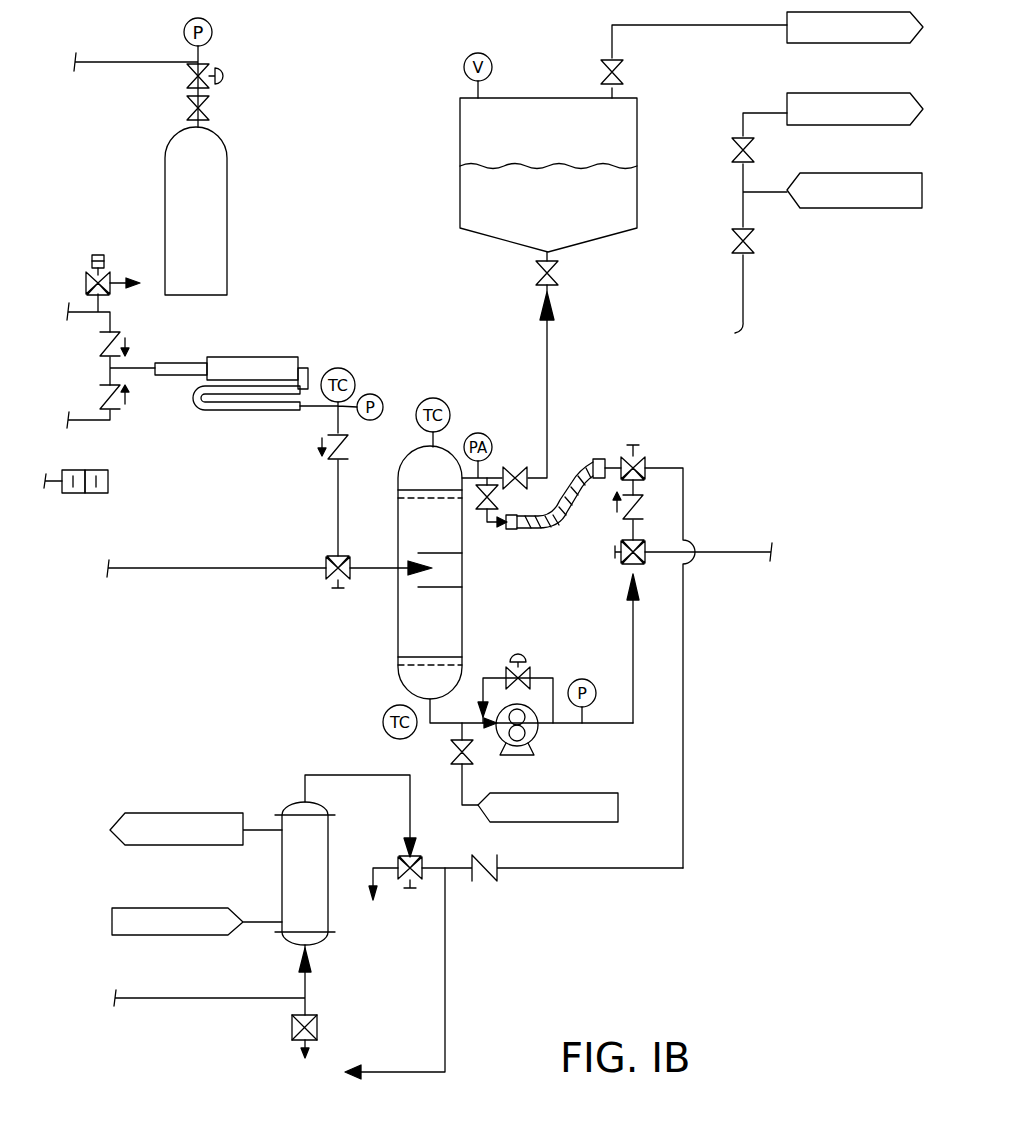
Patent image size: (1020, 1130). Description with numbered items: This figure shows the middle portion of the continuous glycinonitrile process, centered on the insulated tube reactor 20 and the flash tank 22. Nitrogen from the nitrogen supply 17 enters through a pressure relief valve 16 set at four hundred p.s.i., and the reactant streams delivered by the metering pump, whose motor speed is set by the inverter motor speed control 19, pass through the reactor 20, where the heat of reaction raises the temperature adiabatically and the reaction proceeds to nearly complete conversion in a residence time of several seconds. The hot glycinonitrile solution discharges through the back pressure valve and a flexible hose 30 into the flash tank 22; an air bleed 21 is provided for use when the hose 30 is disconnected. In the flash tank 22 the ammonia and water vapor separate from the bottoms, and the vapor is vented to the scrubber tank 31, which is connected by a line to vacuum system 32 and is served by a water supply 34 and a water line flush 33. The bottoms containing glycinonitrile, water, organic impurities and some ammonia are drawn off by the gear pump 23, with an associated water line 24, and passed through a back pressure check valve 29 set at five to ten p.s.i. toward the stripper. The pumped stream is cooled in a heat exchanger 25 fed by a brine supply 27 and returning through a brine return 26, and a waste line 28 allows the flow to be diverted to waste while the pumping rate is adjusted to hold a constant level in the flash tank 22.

The pressure relief valve 16 is at (90, 250).
The nitrogen supply 17 is at (196, 211).
The inverter motor speed control 19 is at (125, 481).
The reactor 20 is at (231, 405).
The air bleed 21 is at (496, 527).
The flash tank 22 is at (430, 572).
The gear pump 23 is at (511, 744).
The water line 24 is at (548, 808).
The heat exchanger 25 is at (305, 873).
The brine return 26 is at (196, 829).
The brine supply 27 is at (197, 922).
The waste line 28 is at (311, 1052).
The back pressure check valve 29 is at (647, 510).
The hose 30 is at (583, 455).
The scrubber tank 31 is at (548, 175).
The line to vacuum system 32 is at (855, 27).
The water line flush 33 is at (855, 109).
The water supply 34 is at (854, 190).